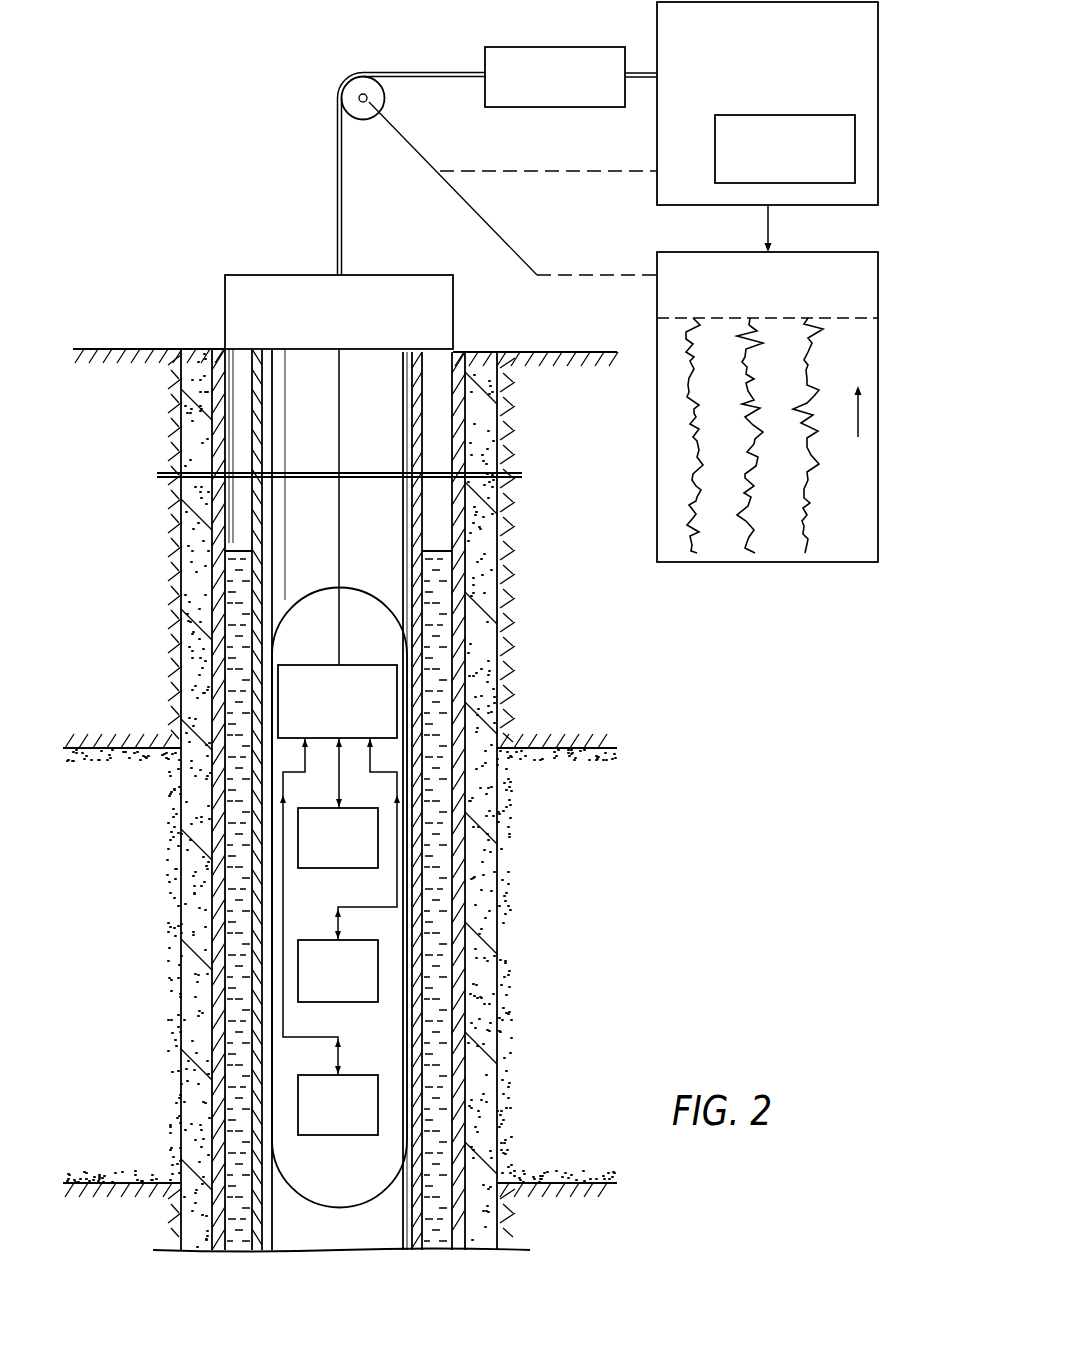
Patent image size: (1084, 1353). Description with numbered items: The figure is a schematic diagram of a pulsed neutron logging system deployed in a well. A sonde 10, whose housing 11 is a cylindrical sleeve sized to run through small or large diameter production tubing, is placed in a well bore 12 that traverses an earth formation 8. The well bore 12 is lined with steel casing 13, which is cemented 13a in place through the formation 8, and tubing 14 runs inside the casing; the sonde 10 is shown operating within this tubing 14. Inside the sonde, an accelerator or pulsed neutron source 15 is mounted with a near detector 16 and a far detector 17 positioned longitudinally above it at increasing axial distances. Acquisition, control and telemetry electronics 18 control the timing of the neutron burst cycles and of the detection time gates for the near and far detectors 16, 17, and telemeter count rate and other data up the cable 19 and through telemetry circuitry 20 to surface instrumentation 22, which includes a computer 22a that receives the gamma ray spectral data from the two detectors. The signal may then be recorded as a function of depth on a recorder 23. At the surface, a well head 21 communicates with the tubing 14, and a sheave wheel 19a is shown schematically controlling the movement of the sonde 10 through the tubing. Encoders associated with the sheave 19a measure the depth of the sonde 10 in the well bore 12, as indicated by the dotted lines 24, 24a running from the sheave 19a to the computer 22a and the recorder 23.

The earth formation 8 is at (546, 1017).
The sonde 10 is at (383, 636).
The housing 11 is at (272, 1095).
The well bore 12 is at (232, 557).
The steel casing 13 is at (213, 610).
The cement 13a is at (185, 965).
The tubing 14 is at (418, 1180).
The pulsed neutron source 15 is at (378, 1095).
The near detector 16 is at (378, 968).
The far detector 17 is at (298, 840).
The acquisition, control and telemetry electronics 18 is at (278, 678).
The cable 19 is at (349, 80).
The sheave wheel 19a is at (347, 99).
The telemetry circuitry 20 is at (554, 47).
The well head 21 is at (262, 275).
The surface instrumentation 22 is at (878, 40).
The computer 22a is at (855, 152).
The recorder 23 is at (878, 280).
The dotted line 24 is at (556, 172).
The dotted line 24a is at (528, 262).